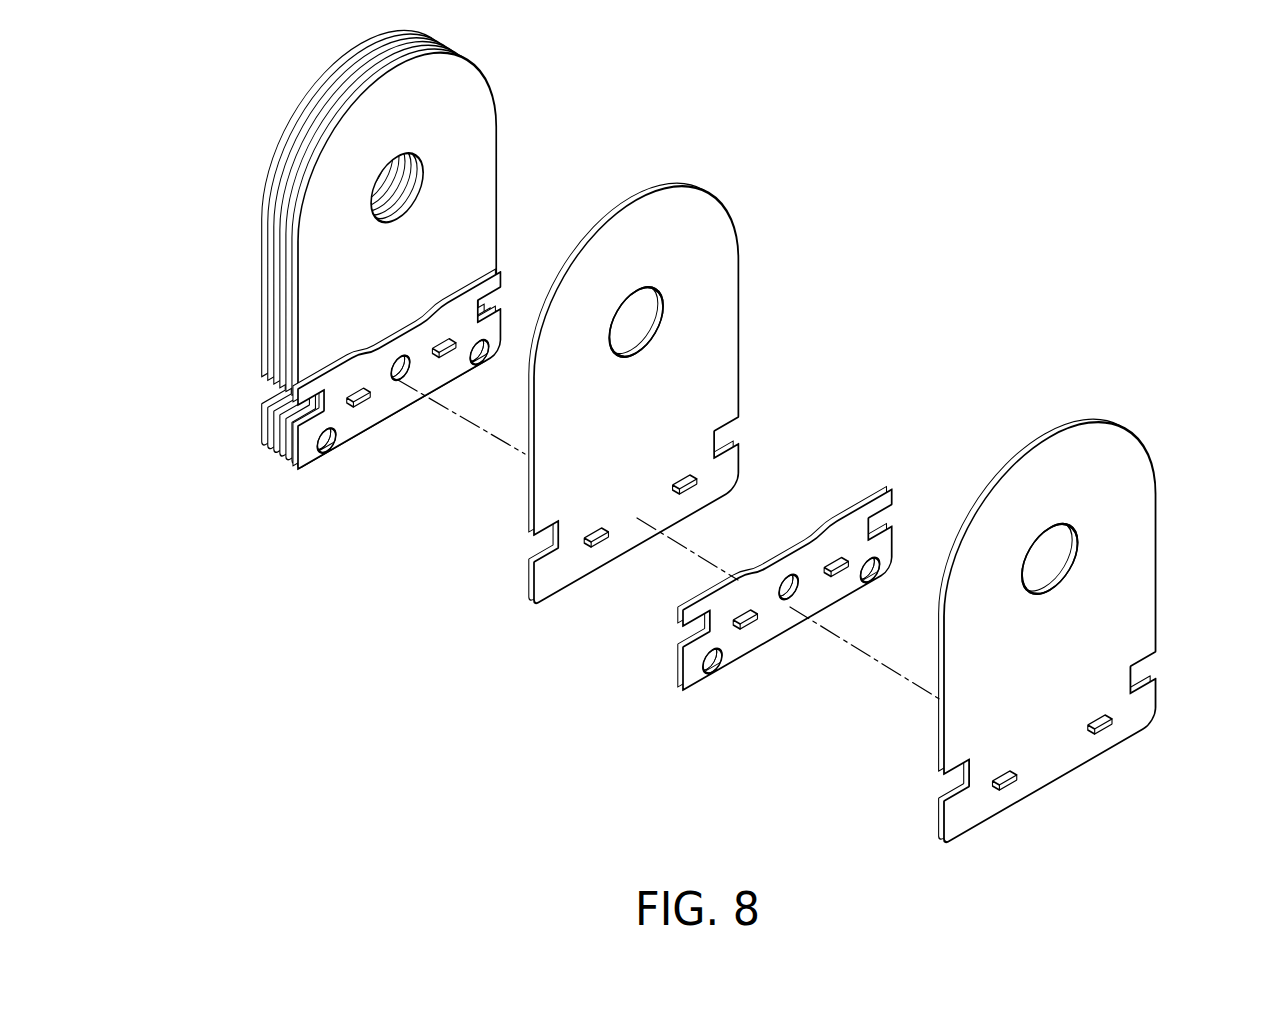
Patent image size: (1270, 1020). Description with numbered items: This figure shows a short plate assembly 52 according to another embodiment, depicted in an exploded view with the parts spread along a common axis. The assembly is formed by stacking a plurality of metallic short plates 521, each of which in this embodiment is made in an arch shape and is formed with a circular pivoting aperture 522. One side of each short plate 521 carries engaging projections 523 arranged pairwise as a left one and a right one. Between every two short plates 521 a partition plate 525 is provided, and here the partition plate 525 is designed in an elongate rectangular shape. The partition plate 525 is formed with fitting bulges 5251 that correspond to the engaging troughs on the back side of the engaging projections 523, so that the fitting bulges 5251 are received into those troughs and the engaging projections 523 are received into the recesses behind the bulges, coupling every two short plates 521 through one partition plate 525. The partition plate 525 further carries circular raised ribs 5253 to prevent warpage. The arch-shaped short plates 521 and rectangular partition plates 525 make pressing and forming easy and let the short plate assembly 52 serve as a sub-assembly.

The short plate assembly 52 is at (251, 99).
The short plate 521 is at (473, 153).
The pivoting aperture 522 is at (638, 318).
The engaging projection 523 is at (597, 535).
The partition plate 525 is at (388, 405).
The fitting bulge 5251 is at (845, 563).
The rib 5253 is at (793, 587).